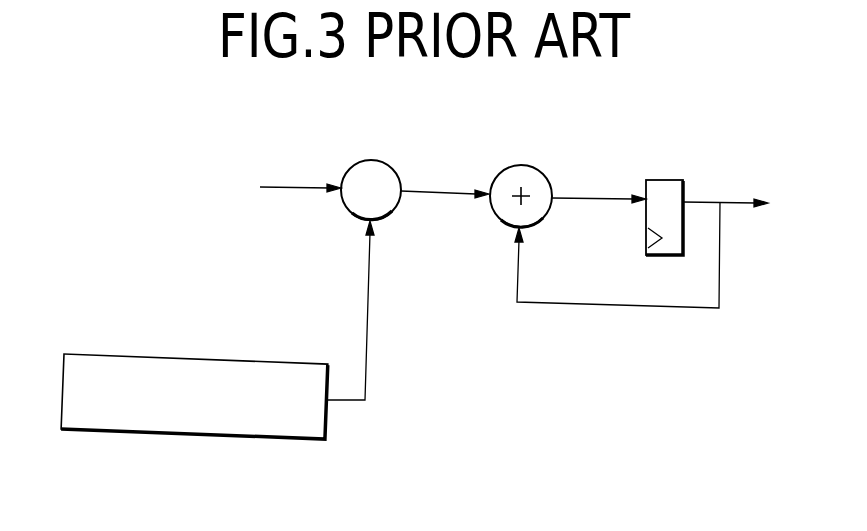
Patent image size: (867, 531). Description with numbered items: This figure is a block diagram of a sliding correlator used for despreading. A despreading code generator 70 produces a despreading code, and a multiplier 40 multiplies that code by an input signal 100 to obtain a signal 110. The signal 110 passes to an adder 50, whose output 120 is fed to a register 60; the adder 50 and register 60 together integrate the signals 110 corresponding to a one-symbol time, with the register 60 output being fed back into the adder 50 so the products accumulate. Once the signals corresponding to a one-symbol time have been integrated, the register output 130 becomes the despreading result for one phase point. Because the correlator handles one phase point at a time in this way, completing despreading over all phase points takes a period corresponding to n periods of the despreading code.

The multiplier 40 is at (368, 159).
The adder 50 is at (517, 165).
The register 60 is at (662, 180).
The despreading code generator 70 is at (197, 436).
The input signal 100 is at (276, 186).
The signal 110 is at (438, 189).
The added signal 120 is at (588, 194).
The register output 130 is at (735, 200).